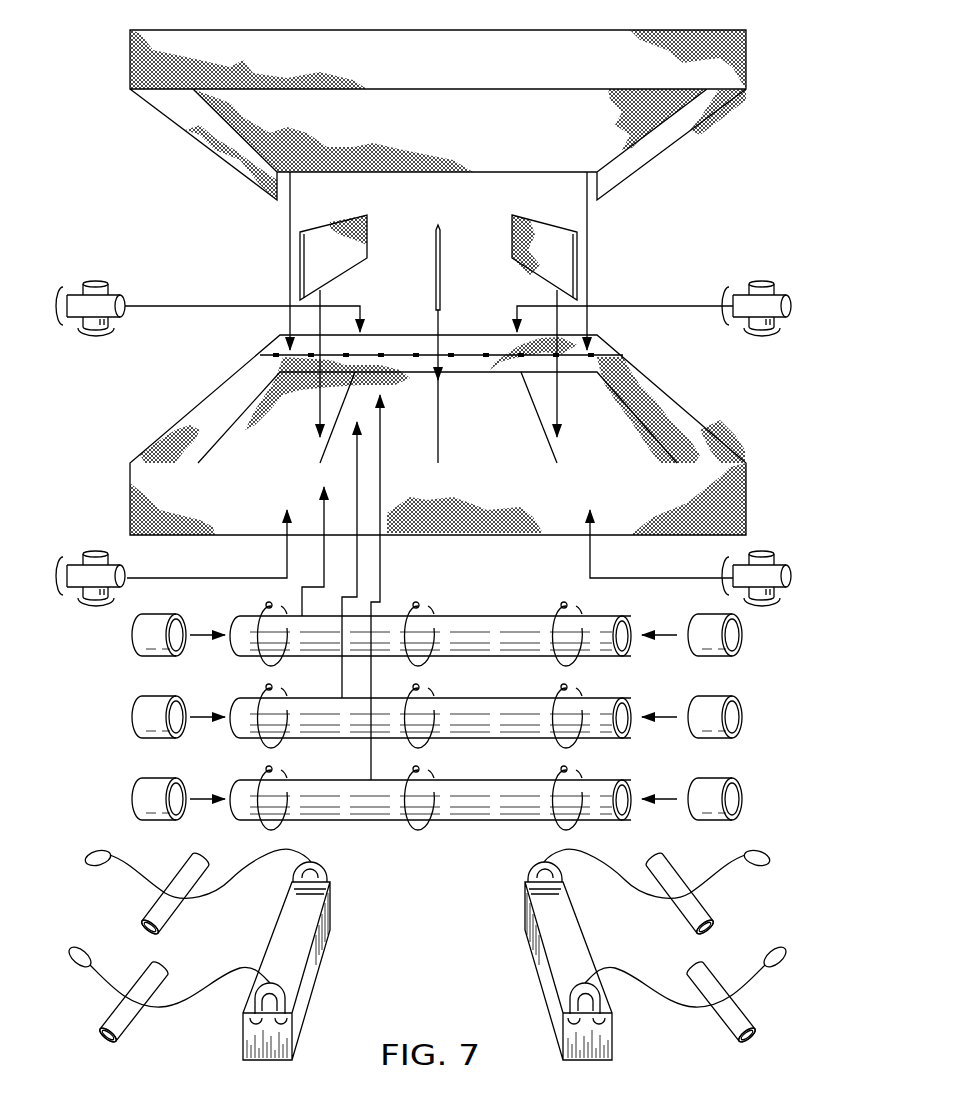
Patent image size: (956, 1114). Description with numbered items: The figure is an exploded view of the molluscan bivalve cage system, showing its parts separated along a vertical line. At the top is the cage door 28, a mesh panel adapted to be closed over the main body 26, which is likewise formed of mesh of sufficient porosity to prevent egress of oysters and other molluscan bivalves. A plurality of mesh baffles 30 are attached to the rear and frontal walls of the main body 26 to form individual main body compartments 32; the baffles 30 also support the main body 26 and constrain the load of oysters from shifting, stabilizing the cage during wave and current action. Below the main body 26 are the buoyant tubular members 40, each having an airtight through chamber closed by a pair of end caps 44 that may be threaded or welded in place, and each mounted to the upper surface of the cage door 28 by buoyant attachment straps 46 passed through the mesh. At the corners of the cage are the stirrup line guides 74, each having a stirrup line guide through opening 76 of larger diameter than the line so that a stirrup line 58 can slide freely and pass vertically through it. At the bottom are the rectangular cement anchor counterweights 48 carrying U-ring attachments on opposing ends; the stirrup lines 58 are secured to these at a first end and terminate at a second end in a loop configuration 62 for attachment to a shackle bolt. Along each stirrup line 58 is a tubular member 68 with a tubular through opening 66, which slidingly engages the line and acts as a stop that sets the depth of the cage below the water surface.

The main body 26 is at (700, 420).
The cage door 28 is at (586, 30).
The baffles 30 is at (340, 264).
The main body compartments 32 is at (298, 446).
The buoyant tubular members 40 is at (485, 616).
The end caps 44 is at (132, 648).
The buoyant attachment straps 46 is at (400, 616).
The anchor counterweights 48 is at (318, 975).
The stirrup lines 58 is at (140, 877).
The loop configuration 62 is at (102, 850).
The tubular through opening 66 is at (140, 922).
The tubular members 68 is at (173, 910).
The stirrup line guides 74 is at (120, 318).
The stirrup line guide through openings 76 is at (96, 283).